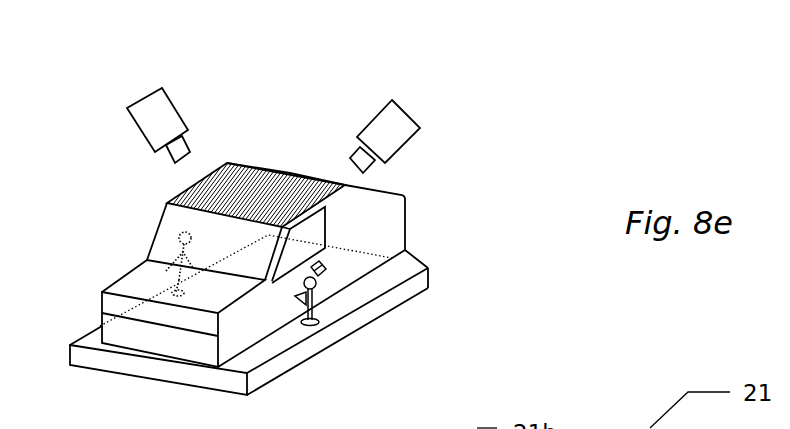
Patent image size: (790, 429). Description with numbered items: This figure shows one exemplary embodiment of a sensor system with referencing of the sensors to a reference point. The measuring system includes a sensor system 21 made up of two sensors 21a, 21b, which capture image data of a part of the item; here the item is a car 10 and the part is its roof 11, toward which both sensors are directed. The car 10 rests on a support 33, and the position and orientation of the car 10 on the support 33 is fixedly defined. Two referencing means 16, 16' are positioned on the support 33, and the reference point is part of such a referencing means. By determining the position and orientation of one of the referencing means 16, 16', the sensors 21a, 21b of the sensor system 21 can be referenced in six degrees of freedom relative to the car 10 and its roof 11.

The car 10 is at (218, 261).
The roof 11 is at (234, 195).
The referencing means 16 is at (368, 311).
The referencing means 16' is at (111, 264).
The sensor system 21 is at (336, 99).
The sensor 21a is at (448, 143).
The sensor 21b is at (193, 106).
The support 33 is at (249, 339).